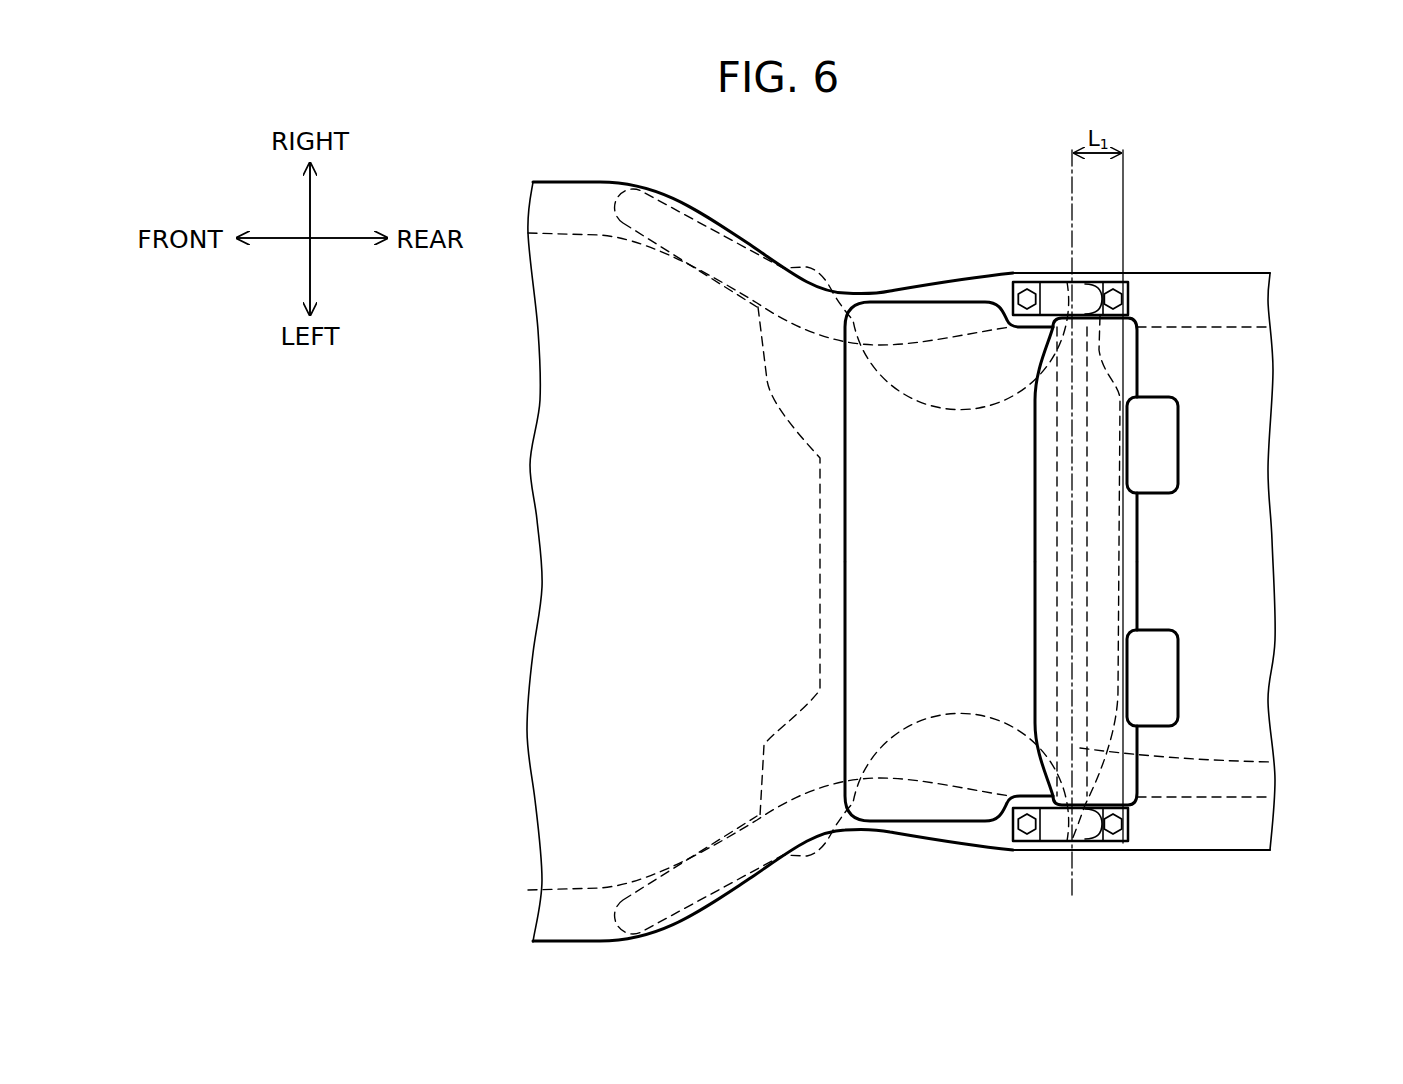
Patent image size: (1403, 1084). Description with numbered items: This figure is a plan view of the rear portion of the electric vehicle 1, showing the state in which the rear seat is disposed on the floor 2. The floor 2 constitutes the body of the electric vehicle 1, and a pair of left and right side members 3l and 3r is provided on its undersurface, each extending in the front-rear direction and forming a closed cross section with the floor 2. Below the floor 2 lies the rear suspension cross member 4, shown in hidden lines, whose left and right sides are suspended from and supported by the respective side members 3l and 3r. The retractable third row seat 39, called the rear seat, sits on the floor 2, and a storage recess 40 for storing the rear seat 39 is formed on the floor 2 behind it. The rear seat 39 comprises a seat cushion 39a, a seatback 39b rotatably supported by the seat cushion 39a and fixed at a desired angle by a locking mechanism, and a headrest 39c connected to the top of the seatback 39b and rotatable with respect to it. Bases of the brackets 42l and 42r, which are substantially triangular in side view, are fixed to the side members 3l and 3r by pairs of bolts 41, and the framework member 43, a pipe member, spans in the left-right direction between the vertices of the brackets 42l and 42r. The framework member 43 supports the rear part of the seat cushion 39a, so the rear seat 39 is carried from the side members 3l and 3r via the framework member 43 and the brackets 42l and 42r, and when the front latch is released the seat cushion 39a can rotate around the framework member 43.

The electric vehicle 1 is at (1306, 198).
The floor 2 is at (538, 468).
The right side member 3r is at (1227, 292).
The left side member 3l is at (1226, 835).
The rear suspension cross member 4 is at (818, 505).
The retractable third row seat 39 is at (1106, 561).
The seat cushion 39a is at (995, 598).
The seatback 39b is at (1127, 527).
The headrest 39c is at (1165, 448).
The storage recess 40 is at (1214, 406).
The bolts 41 is at (1013, 283).
The right bracket 42r is at (1050, 283).
The left bracket 42l is at (1052, 835).
The framework member 43 is at (1090, 750).